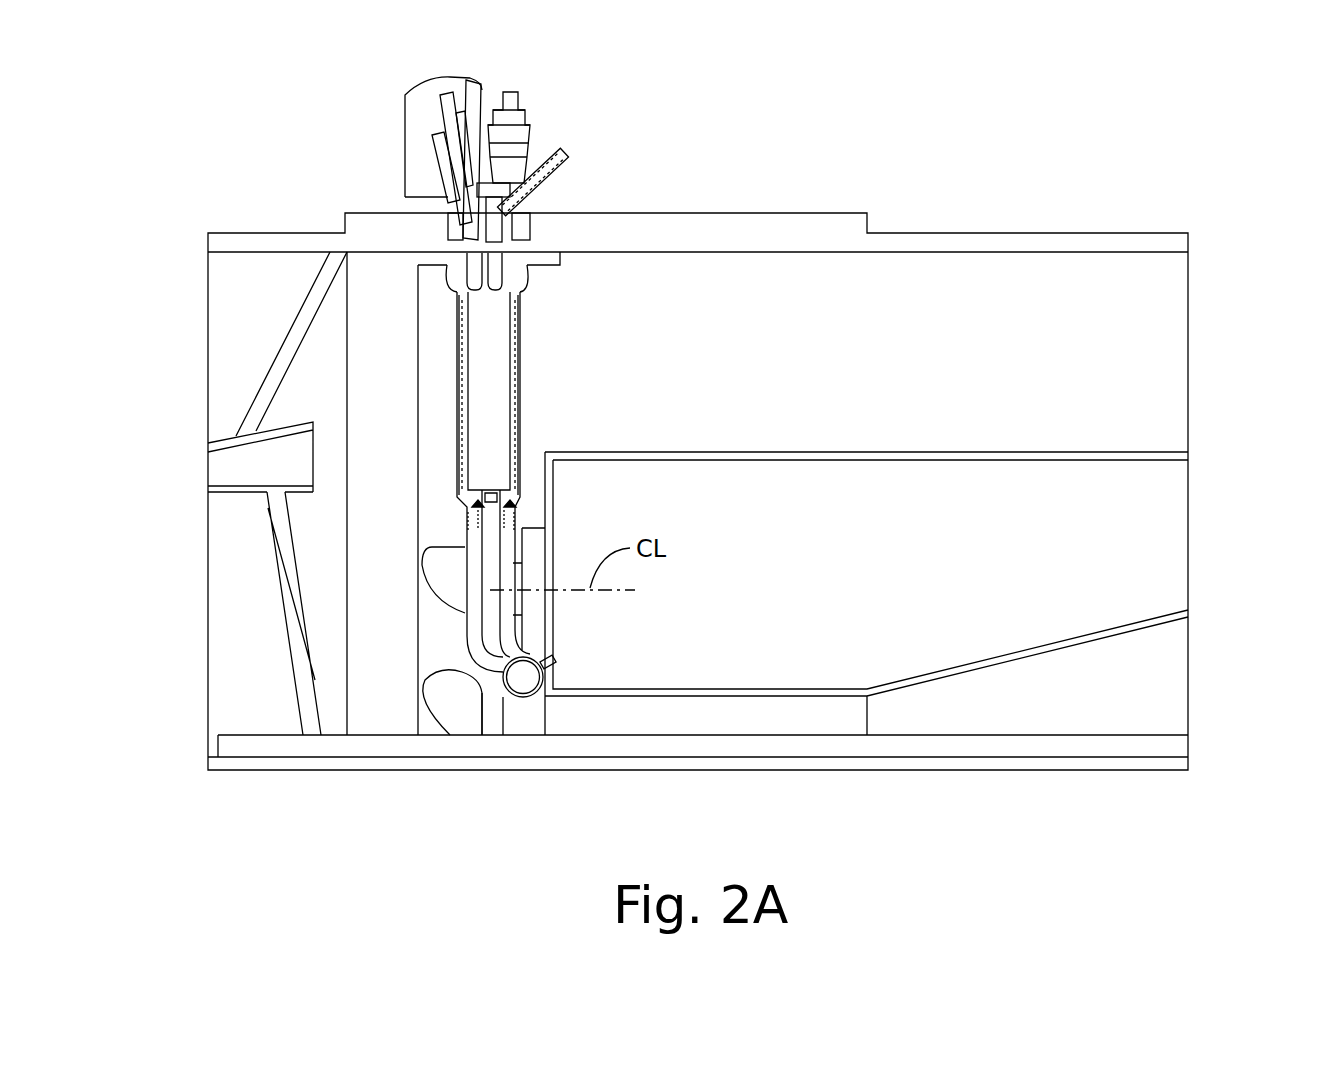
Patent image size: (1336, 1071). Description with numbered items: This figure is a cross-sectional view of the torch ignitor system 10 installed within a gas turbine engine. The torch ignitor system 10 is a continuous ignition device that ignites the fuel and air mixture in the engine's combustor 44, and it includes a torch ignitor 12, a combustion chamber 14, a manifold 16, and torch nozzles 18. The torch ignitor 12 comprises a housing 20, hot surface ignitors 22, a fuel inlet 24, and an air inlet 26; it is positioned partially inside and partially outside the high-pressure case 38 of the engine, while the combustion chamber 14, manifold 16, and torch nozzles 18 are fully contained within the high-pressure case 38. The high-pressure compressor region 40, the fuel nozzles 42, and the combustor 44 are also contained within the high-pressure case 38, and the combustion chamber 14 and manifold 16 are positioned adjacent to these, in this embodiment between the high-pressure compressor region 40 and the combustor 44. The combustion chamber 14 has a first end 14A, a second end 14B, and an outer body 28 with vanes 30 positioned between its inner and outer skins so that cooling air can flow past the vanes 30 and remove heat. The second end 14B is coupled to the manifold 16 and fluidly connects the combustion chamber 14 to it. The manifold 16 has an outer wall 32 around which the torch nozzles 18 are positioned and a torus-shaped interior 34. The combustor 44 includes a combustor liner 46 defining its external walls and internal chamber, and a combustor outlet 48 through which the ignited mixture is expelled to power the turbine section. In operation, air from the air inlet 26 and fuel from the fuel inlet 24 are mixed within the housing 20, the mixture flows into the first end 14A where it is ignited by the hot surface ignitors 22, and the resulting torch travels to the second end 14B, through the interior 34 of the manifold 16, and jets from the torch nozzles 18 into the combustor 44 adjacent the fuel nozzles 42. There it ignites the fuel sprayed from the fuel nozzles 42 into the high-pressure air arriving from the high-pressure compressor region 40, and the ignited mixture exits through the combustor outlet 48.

The torch ignitor system 10 is at (545, 100).
The torch ignitor 12 is at (545, 130).
The combustion chamber 14 is at (525, 410).
The first end 14A is at (535, 290).
The second end 14B is at (455, 636).
The manifold 16 is at (527, 715).
The torch nozzles 18 is at (565, 665).
The housing 20 is at (435, 238).
The hot surface ignitors 22 is at (450, 110).
The fuel inlet 24 is at (563, 160).
The air inlet 26 is at (478, 82).
The outer body 28 is at (470, 565).
The vanes 30 is at (457, 380).
The outer wall 32 is at (541, 691).
The interior 34 is at (522, 677).
The high-pressure case 38 is at (1045, 245).
The high-pressure compressor region 40 is at (262, 460).
The fuel nozzles 42 is at (530, 605).
The combustor 44 is at (860, 572).
The combustor liner 46 is at (1168, 460).
The combustor outlet 48 is at (1095, 548).